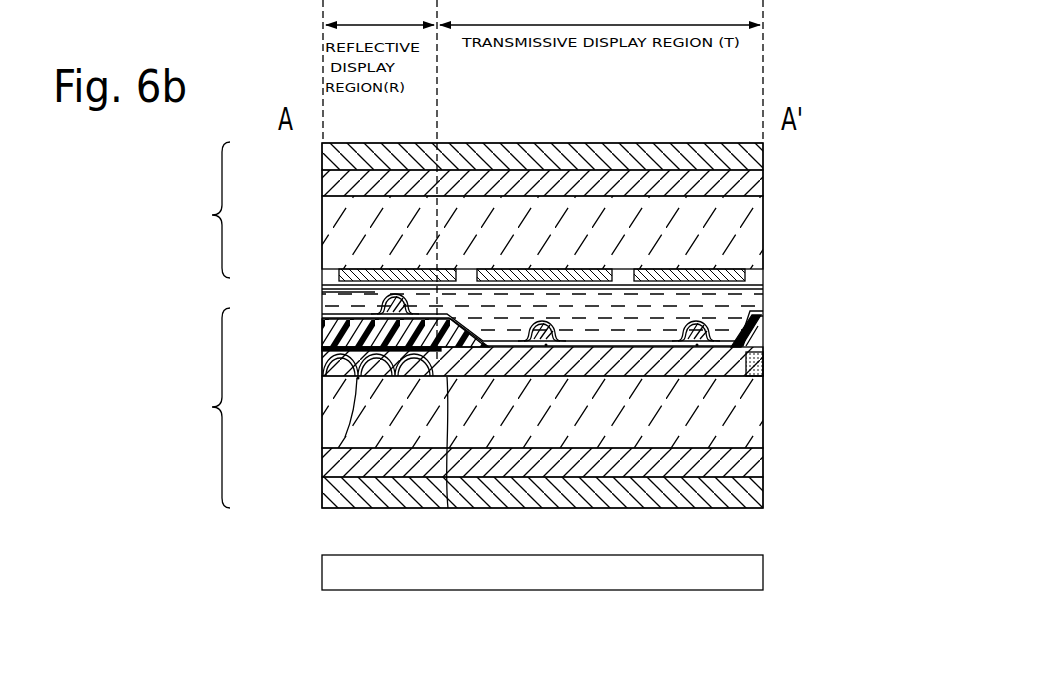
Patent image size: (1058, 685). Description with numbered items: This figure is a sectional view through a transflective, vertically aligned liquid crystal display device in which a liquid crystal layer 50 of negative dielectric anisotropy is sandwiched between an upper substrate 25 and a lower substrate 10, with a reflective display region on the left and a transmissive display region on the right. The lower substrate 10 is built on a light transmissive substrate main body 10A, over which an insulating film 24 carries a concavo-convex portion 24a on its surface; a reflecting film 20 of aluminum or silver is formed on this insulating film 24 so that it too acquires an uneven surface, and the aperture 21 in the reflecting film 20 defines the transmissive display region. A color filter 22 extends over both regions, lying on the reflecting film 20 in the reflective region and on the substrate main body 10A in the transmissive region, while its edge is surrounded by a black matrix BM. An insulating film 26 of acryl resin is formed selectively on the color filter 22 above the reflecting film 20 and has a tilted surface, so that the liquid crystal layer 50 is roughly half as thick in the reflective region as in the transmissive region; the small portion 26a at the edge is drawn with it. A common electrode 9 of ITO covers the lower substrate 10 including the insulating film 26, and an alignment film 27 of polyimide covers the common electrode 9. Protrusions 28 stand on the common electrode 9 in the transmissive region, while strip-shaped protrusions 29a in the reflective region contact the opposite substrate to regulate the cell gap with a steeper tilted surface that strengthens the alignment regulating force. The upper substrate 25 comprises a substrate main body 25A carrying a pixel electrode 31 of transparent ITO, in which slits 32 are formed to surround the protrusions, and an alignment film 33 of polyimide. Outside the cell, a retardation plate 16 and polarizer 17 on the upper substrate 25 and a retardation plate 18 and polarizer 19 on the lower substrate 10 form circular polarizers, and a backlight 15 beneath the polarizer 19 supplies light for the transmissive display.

The upper substrate 25 is at (202, 210).
The polarizer 17 is at (765, 155).
The retardation plate 16 is at (765, 183).
The substrate main body 25A is at (765, 213).
The alignment film 33 is at (748, 275).
The slits 32 is at (612, 268).
The pixel electrode 31 is at (765, 287).
The protrusions 29a is at (322, 292).
The liquid crystal layer 50 is at (765, 296).
The alignment film 27 is at (765, 314).
The common electrode 9 is at (322, 316).
The insulating film 26 is at (322, 335).
The reflective film edge portion 26a is at (765, 340).
The black matrix BM is at (322, 351).
The color filter 22 is at (765, 418).
The reflecting film 20 is at (321, 354).
The lower substrate 10 is at (202, 408).
The substrate main body 10A is at (765, 448).
The retardation plate 18 is at (765, 478).
The polarizer 19 is at (765, 505).
The concavo-convex portion 24a is at (345, 437).
The insulating film 24 is at (358, 378).
The aperture 21 is at (448, 508).
The protrusions 28 is at (546, 345).
The backlight 15 is at (750, 568).